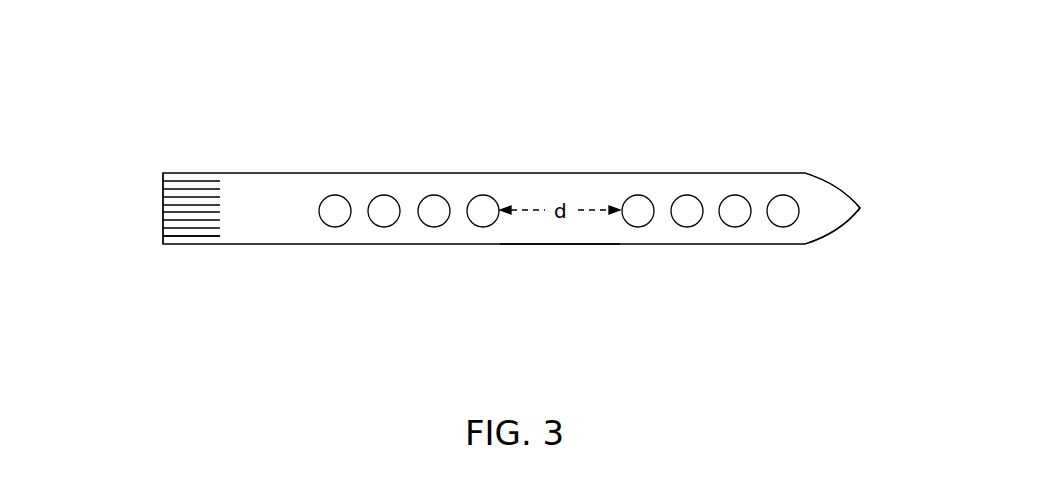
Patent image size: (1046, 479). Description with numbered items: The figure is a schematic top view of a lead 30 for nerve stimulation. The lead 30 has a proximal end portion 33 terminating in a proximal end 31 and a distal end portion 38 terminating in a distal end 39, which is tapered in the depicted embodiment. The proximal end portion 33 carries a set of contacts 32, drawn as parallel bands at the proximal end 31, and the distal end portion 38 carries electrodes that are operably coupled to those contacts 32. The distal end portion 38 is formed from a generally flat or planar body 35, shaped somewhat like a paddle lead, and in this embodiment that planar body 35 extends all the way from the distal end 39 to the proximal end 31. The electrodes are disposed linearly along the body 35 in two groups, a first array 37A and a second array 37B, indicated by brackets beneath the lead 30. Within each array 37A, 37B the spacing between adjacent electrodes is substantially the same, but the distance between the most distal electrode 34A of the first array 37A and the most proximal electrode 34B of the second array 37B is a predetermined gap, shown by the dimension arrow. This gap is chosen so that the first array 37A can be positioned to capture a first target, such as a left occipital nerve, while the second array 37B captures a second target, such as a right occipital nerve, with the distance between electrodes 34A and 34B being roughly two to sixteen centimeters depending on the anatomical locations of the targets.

The lead 30 is at (675, 92).
The proximal end 31 is at (162, 189).
The contacts 32 is at (200, 238).
The proximal end portion 33 is at (222, 150).
The most distal electrode of the first array 34A is at (483, 211).
The most proximal electrode of the second array 34B is at (638, 210).
The generally flat or planar body 35 is at (592, 238).
The first array of electrodes 37A is at (324, 263).
The second array of electrodes 37B is at (626, 257).
The distal end portion 38 is at (808, 160).
The distal end 39 is at (862, 208).